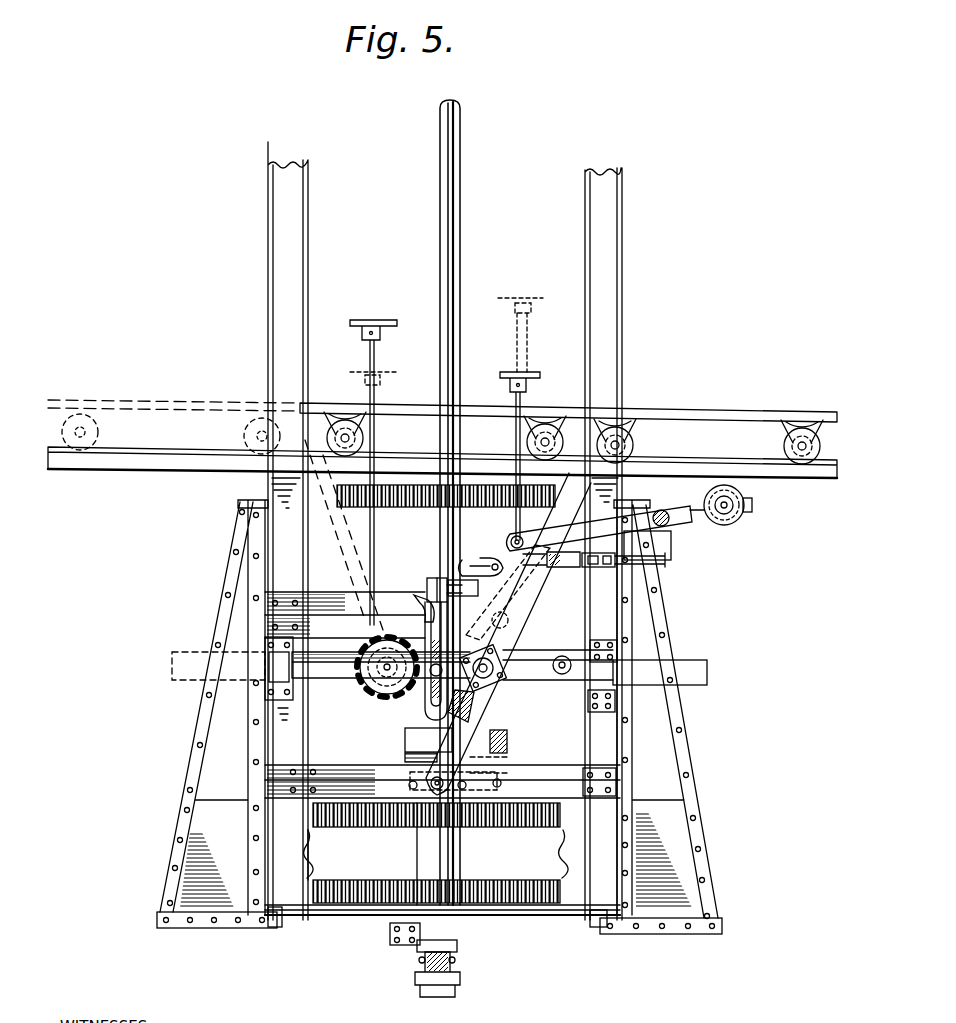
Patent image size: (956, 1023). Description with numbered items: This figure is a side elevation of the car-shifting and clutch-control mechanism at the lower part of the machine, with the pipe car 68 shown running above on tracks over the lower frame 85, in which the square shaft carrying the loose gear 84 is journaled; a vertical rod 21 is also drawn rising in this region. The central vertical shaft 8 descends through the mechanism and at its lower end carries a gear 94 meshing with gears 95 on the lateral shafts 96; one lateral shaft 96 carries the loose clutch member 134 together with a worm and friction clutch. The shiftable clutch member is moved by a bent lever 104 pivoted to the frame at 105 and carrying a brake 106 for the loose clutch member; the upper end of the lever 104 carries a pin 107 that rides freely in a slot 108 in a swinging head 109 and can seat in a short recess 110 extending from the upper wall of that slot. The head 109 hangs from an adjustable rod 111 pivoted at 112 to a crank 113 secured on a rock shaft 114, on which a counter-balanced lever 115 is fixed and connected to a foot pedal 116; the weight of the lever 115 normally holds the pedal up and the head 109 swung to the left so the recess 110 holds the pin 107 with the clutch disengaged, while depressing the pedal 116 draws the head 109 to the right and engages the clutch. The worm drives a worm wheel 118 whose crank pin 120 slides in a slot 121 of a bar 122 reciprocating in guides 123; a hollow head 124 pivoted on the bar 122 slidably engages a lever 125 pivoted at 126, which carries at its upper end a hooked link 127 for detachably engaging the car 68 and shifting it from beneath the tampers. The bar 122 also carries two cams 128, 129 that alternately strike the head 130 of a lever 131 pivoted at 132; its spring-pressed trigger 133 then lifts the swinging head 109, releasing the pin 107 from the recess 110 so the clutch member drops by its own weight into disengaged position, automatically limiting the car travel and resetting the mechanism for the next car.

The central vertical shaft 8 is at (461, 200).
The vertical rod 21 is at (530, 393).
The car 68 is at (466, 405).
The loose gear 84 is at (490, 885).
The lower frame 85 is at (535, 866).
The gear 94 is at (352, 538).
The gears 95 is at (445, 518).
The lateral shaft 96 is at (445, 545).
The bent lever 104 is at (508, 750).
The pivot 105 is at (500, 775).
The brake 106 is at (480, 740).
The pin 107 is at (512, 556).
The slot 108 is at (500, 550).
The head 109 is at (462, 570).
The recess 110 is at (540, 572).
The adjustable rod 111 is at (668, 572).
The pivot 112 is at (672, 560).
The crank 113 is at (676, 545).
The rock shaft 114 is at (663, 512).
The counter-balanced lever 115 is at (730, 526).
The foot pedal 116 is at (540, 376).
The worm wheel 118 is at (372, 698).
The crank pin 120 is at (410, 720).
The slot 121 is at (432, 602).
The bar 122 is at (272, 662).
The guides 123 is at (640, 690).
The hollow head 124 is at (640, 612).
The lever 125 is at (498, 688).
The pivot 126 is at (415, 808).
The link 127 is at (455, 460).
The cam 128 is at (436, 592).
The cam 129 is at (625, 668).
The head 130 is at (486, 577).
The lever 131 is at (530, 616).
The pivot 132 is at (640, 645).
The spring-pressed trigger 133 is at (534, 600).
The loose clutch member 134 is at (410, 945).